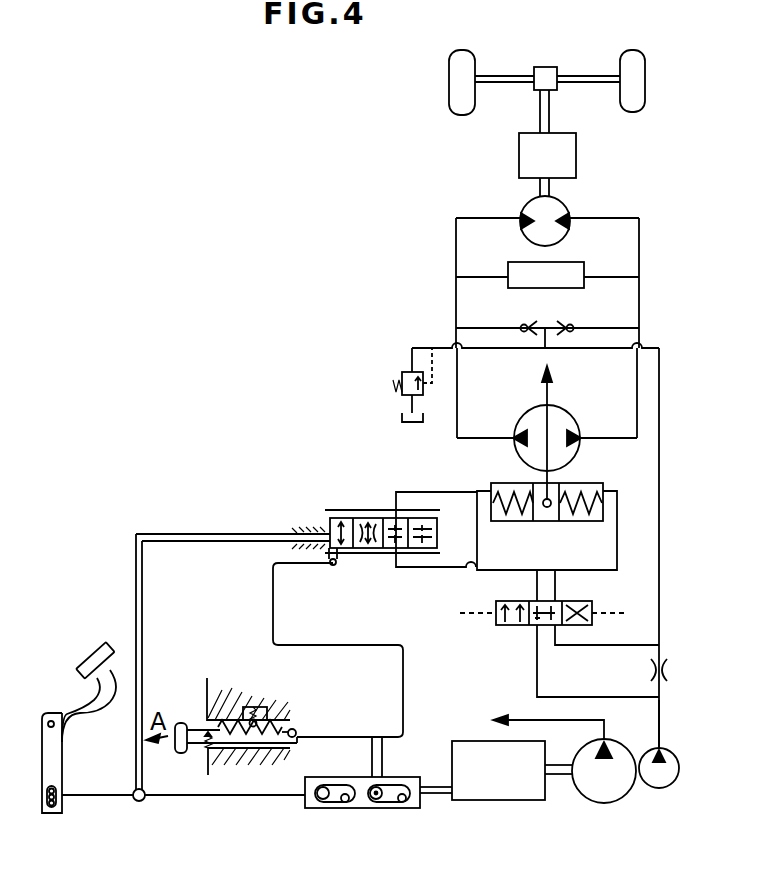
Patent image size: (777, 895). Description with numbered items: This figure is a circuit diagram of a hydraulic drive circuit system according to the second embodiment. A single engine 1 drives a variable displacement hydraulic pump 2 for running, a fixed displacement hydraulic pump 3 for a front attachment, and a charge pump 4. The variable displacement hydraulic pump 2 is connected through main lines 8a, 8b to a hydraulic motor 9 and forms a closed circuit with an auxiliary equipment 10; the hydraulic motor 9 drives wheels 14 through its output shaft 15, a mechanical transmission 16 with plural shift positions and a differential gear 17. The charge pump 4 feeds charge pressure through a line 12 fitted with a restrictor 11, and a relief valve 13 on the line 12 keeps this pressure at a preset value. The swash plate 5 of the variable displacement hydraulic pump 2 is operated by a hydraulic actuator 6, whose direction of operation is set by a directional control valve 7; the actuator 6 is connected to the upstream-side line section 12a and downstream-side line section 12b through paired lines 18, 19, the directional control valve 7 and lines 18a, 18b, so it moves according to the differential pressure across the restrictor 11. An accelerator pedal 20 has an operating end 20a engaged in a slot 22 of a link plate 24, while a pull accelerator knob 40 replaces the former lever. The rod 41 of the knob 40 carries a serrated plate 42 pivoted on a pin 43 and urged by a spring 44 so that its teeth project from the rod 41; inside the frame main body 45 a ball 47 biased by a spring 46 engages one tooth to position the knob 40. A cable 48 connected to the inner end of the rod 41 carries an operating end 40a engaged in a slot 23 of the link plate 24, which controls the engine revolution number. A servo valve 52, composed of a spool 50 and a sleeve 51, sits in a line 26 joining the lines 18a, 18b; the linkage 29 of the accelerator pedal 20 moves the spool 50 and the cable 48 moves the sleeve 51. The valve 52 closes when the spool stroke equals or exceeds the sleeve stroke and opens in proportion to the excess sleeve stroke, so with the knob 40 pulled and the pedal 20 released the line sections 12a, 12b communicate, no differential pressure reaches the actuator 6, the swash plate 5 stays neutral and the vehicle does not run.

The engine 1 is at (500, 800).
The variable displacement hydraulic pump 2 is at (578, 422).
The fixed displacement hydraulic pump 3 is at (596, 803).
The charge pump 4 is at (653, 788).
The displacement varying mechanism (swash plate) 5 is at (549, 396).
The hydraulic actuator 6 is at (598, 483).
The directional control valve 7 is at (590, 602).
The main line 8a is at (640, 424).
The main line 8b is at (460, 392).
The hydraulic motor 9 is at (522, 205).
The auxiliary equipment 10 is at (565, 262).
The restrictor 11 is at (668, 680).
The line 12 is at (661, 542).
The upstream-side line section 12a is at (661, 740).
The downstream-side line section 12b is at (661, 645).
The relief valve 13 is at (405, 372).
The wheels 14 is at (476, 60).
The output shaft 15 is at (550, 190).
The mechanical transmission 16 is at (577, 158).
The differential gear 17 is at (552, 66).
The line 18 is at (537, 684).
The line 18a is at (478, 545).
The line 18b is at (616, 542).
The line 19 is at (594, 650).
The accelerator pedal 20 is at (95, 663).
The operating end 20a is at (323, 800).
The slot 22 is at (350, 803).
The slot 23 is at (405, 802).
The link plate 24 is at (309, 812).
The line 26 is at (436, 492).
The linkage 29 is at (135, 596).
The pull accelerator knob 40 is at (181, 723).
The operating end 40a is at (377, 800).
The rod 41 is at (260, 748).
The serrated plate 42 is at (288, 716).
The pin 43 is at (298, 732).
The spring 44 is at (206, 745).
The frame main body 45 is at (212, 685).
The spring 46 is at (268, 708).
The ball 47 is at (252, 707).
The cable 48 is at (405, 702).
The spool 50 is at (328, 520).
The sleeve 51 is at (351, 510).
The servo valve 52 is at (382, 508).